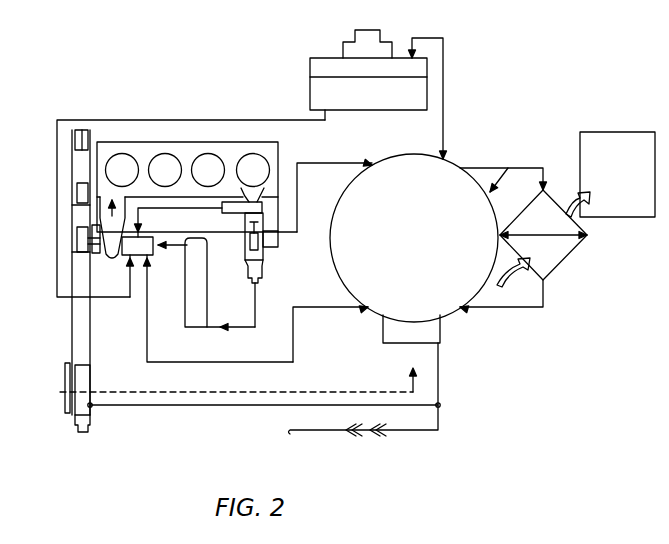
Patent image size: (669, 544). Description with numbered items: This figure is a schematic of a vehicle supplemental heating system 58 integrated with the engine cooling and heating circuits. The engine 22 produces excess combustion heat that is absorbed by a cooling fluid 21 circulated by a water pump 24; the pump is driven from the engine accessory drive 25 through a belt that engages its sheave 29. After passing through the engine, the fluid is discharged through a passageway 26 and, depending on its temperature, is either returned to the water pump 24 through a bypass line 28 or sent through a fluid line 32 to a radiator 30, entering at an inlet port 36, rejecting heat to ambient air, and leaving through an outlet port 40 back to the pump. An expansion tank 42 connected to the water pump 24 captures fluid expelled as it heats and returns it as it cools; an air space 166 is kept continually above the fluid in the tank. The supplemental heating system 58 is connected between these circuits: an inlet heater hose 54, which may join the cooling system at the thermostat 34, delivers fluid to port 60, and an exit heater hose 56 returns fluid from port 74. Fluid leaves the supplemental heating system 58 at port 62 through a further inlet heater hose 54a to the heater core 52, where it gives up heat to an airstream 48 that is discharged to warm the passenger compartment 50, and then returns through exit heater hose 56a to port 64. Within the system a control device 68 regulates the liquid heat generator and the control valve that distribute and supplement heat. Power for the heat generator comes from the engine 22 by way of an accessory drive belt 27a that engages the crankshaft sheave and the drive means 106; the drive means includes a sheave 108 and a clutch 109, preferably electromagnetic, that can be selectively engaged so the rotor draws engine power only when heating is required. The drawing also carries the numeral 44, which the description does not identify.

The cooling fluid 21 is at (311, 88).
The engine 22 is at (152, 142).
The water pump 24 is at (110, 260).
The engine accessory drive 25 is at (72, 140).
The passageway 26 is at (297, 181).
The engine accessory drive belt 27a is at (72, 328).
The bypass line 28 is at (200, 210).
The sheave 29 is at (72, 243).
The radiator 30 is at (180, 296).
The fluid line 32 is at (265, 297).
The thermostat 34 is at (283, 240).
The inlet port 36 is at (212, 330).
The outlet port 40 is at (141, 236).
The expansion tank 42 is at (446, 68).
The charge air flow 44 is at (152, 266).
The airstream 48 is at (587, 222).
The passenger compartment 50 is at (594, 133).
The heater core 52 is at (562, 258).
The inlet heater hose 54 is at (328, 163).
The inlet heater hose 54a is at (480, 168).
The exit heater hose 56 is at (322, 312).
The exit heater hose 56a is at (538, 307).
The supplemental heating system 58 is at (508, 168).
The port 60 is at (370, 156).
The port 62 is at (455, 160).
The port 64 is at (468, 312).
The control device 68 is at (455, 342).
The port 74 is at (368, 325).
The drive means 106 is at (64, 410).
The sheave 108 is at (89, 434).
The clutch 109 is at (92, 380).
The air space 166 is at (312, 66).